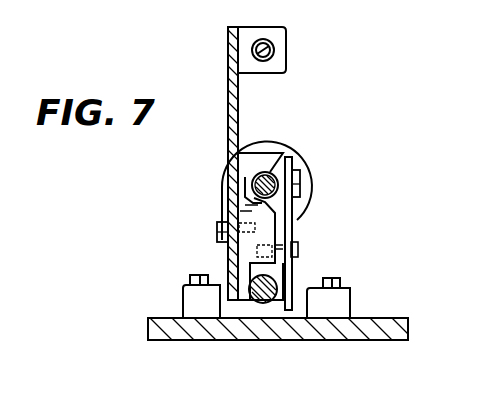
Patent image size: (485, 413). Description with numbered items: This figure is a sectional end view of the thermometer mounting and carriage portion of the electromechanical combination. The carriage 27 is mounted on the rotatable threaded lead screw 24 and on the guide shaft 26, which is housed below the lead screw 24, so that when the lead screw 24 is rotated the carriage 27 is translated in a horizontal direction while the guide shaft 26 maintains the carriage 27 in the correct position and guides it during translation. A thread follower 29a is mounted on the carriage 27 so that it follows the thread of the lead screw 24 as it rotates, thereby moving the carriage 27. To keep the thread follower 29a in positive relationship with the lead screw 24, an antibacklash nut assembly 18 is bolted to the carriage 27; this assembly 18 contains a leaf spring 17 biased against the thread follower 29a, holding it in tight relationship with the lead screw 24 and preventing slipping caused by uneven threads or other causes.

The carriage 27 is at (237, 101).
The lead screw 24 is at (268, 183).
The thread follower 29a is at (284, 191).
The antibacklash nut assembly 18 is at (246, 211).
The leaf spring 17 is at (293, 238).
The guide shaft 26 is at (272, 302).